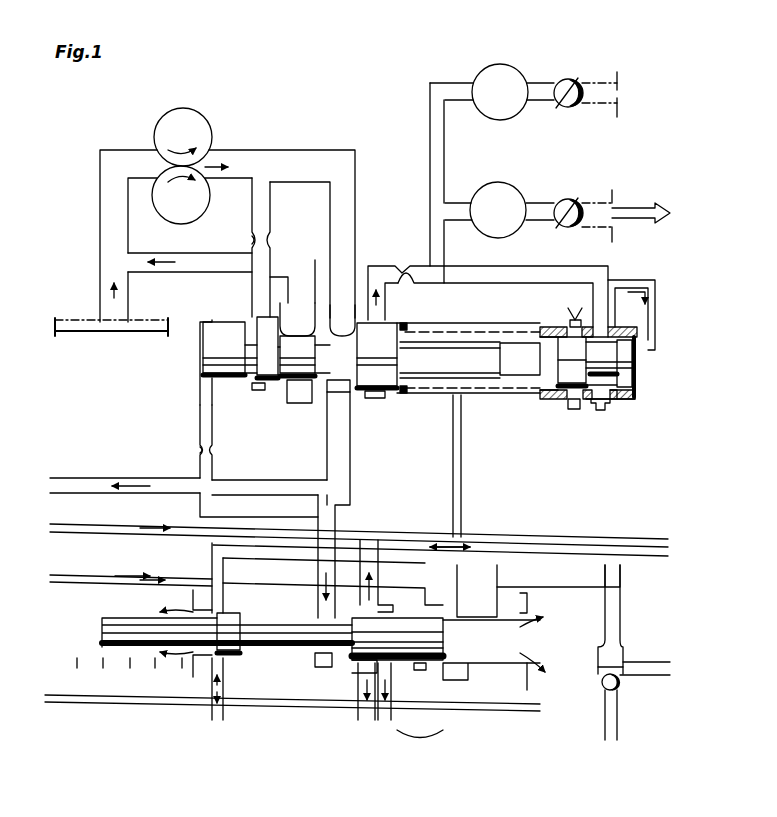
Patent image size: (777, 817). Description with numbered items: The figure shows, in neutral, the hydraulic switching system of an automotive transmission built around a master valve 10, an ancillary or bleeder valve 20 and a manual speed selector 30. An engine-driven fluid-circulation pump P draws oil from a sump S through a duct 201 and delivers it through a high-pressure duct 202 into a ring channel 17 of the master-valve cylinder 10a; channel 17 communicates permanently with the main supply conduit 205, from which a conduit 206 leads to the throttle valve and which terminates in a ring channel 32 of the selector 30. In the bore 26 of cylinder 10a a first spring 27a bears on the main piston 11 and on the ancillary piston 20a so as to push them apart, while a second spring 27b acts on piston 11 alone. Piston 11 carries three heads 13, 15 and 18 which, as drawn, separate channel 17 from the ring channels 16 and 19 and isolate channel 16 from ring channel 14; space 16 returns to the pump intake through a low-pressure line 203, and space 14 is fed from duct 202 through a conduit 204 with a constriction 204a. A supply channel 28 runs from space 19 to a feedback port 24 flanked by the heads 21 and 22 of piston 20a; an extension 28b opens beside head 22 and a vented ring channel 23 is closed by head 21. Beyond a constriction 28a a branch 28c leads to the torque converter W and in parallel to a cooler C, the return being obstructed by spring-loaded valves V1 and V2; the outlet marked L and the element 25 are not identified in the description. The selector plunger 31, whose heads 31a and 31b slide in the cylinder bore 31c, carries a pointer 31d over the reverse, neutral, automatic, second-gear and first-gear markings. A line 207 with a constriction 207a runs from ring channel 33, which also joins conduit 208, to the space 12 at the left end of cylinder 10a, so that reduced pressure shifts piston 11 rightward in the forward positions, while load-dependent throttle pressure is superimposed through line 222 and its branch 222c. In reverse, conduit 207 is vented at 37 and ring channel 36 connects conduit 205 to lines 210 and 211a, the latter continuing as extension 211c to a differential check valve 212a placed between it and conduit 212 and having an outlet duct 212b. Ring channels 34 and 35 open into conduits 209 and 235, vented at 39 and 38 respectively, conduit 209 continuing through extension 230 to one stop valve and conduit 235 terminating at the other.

The fluid-circulation pump P is at (183, 135).
The cooler C is at (512, 76).
The torque converter W is at (498, 192).
The spring-loaded valve V1 is at (571, 197).
The spring-loaded valve V2 is at (571, 80).
The lubrication outlet L is at (641, 203).
The sump S is at (85, 328).
The master valve 10 is at (409, 315).
The master-valve cylinder 10a is at (620, 327).
The main piston 11 is at (232, 357).
The space 12 is at (203, 320).
The head of main piston 13 is at (268, 347).
The ring channel 14 is at (252, 392).
The head of main piston 15 is at (322, 346).
The ring channel 16 is at (300, 392).
The ring channel 17 is at (338, 392).
The head of main piston 18 is at (382, 362).
The ring channel 19 is at (378, 396).
The ancillary valve 20 is at (548, 317).
The ancillary piston 20a is at (634, 392).
The head of ancillary piston 21 is at (572, 361).
The head of ancillary piston 22 is at (623, 372).
The vented ring channel 23 is at (573, 409).
The feedback port 24 is at (599, 410).
The port 25 is at (616, 399).
The bore of master-valve cylinder 26 is at (522, 368).
The first spring 27a is at (513, 385).
The second spring 27b is at (483, 390).
The supply channel 28 is at (382, 272).
The constriction 28a is at (408, 270).
The extension of line 28 28b is at (653, 302).
The branch 28c is at (430, 126).
The manual speed selector 30 is at (540, 632).
The plunger 31 is at (112, 630).
The head of plunger 31a is at (425, 648).
The head of plunger 31b is at (226, 636).
The cylinder bore 31c is at (270, 652).
The pointer 31d is at (100, 647).
The ring channel 32 is at (325, 662).
The ring channel 33 is at (362, 662).
The ring channel 34 is at (393, 664).
The ring channel 35 is at (421, 667).
The ring channel 36 is at (218, 608).
The sump vent 37 is at (388, 600).
The sump vent 38 is at (503, 593).
The sump vent 39 is at (478, 687).
The duct 201 is at (117, 220).
The high-pressure duct 202 is at (235, 170).
The low-pressure line 203 is at (207, 268).
The conduit 204 is at (258, 207).
The constriction 204a is at (266, 243).
The main supply conduit 205 is at (336, 488).
The conduit 206 is at (76, 477).
The line 207 is at (212, 410).
The constriction 207a is at (200, 448).
The conduit 208 is at (358, 717).
The conduit 209 is at (412, 667).
The line 210 is at (225, 717).
The line 211a is at (580, 563).
The extension of conduit 211a 211c is at (620, 588).
The conduit 212 is at (608, 725).
The differential check valve 212a is at (601, 682).
The outlet duct 212b is at (636, 668).
The line 222 is at (549, 538).
The branch 222c is at (460, 505).
The extension 230 is at (293, 706).
The conduit 235 is at (61, 577).